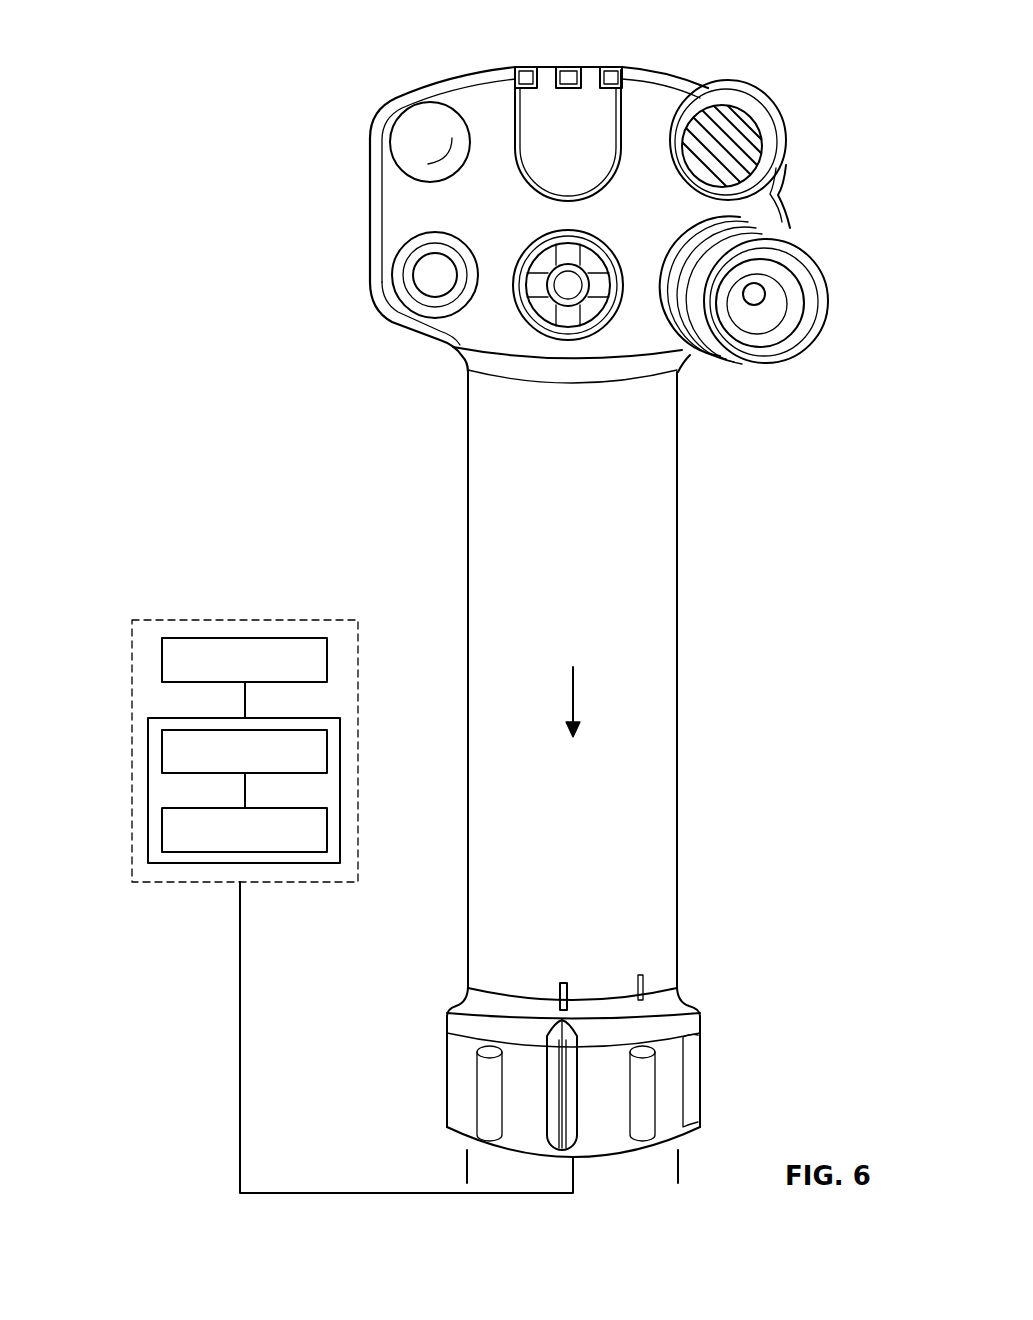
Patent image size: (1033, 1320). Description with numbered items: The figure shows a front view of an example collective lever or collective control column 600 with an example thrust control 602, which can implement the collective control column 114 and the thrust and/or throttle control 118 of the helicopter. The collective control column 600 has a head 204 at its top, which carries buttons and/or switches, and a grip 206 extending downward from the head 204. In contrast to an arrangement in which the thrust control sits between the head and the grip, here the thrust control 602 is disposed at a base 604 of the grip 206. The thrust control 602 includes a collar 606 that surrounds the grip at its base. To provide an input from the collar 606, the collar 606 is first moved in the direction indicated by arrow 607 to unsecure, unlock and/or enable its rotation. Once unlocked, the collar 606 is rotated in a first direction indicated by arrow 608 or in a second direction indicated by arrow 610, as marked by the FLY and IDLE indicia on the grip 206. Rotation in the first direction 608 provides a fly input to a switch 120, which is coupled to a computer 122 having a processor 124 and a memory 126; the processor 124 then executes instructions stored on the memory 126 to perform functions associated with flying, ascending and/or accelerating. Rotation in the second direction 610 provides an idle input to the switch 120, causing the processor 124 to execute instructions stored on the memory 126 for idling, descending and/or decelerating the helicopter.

The collective control column 600 is at (587, 595).
The collective control column 114 is at (587, 595).
The head 204 is at (640, 189).
The grip 206 is at (662, 492).
The arrow 607 is at (574, 708).
The base 604 is at (537, 962).
The arrow 608 is at (532, 978).
The arrow 610 is at (593, 980).
The thrust control 602 is at (650, 1077).
The thrust control 118 is at (650, 1077).
The collar 606 is at (690, 1088).
The switch 120 is at (160, 660).
The computer 122 is at (299, 906).
The processor 124 is at (160, 752).
The memory 126 is at (160, 830).